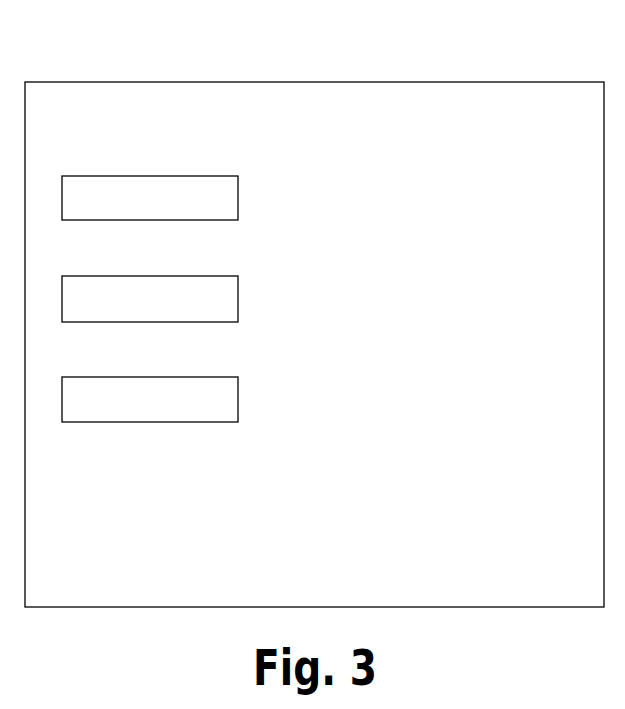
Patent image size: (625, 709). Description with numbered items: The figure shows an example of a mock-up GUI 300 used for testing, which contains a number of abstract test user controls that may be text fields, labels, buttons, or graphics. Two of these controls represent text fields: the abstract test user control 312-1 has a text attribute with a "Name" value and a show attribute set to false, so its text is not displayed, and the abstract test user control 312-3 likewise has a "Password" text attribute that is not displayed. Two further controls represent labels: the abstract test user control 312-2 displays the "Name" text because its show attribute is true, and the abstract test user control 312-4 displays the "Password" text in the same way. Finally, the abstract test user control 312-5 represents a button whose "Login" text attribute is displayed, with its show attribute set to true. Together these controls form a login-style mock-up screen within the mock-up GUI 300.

The mock-up GUI 300 is at (545, 82).
The abstract test user control 312-1 is at (238, 192).
The abstract test user control 312-2 is at (125, 242).
The abstract test user control 312-3 is at (238, 294).
The abstract test user control 312-4 is at (185, 340).
The abstract test user control 312-5 is at (238, 396).